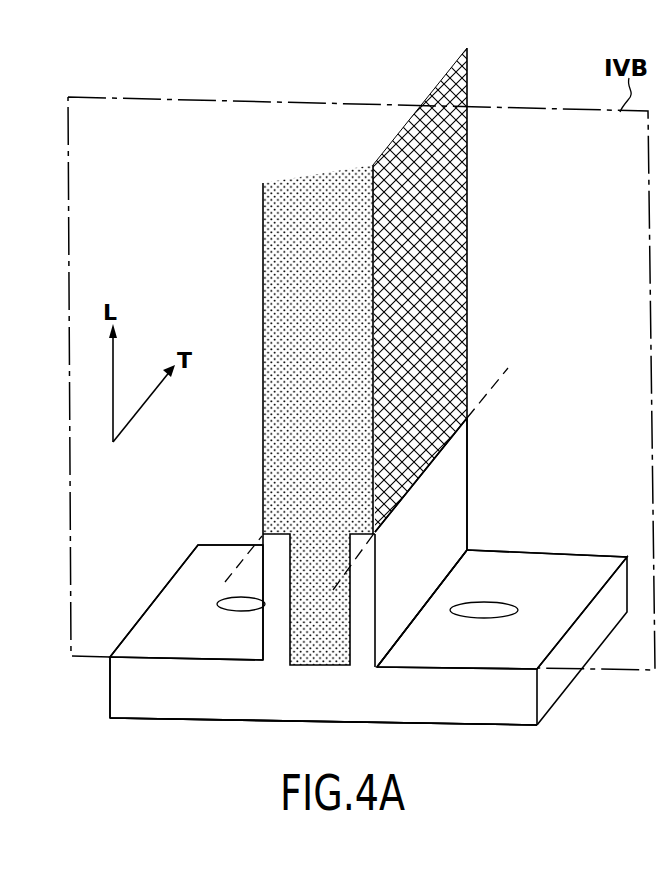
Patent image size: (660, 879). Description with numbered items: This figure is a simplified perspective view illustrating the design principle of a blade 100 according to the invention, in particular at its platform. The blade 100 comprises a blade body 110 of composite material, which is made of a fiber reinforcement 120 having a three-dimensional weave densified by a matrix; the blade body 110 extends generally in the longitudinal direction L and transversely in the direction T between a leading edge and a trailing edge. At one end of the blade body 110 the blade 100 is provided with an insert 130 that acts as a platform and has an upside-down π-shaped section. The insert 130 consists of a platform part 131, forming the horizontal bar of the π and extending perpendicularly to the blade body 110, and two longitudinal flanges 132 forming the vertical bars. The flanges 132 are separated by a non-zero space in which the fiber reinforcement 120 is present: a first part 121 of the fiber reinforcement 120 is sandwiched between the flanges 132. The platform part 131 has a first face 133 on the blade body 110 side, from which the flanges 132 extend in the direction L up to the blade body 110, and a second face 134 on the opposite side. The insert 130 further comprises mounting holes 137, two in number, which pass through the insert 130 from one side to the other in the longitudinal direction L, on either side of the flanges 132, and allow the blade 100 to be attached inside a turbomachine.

The blade 100 is at (156, 81).
The blade body 110 is at (480, 83).
The fiber reinforcement 120 is at (445, 238).
The first part 121 is at (333, 606).
The insert 130 is at (573, 698).
The platform part 131 is at (126, 691).
The longitudinal flanges 132 is at (273, 558).
The first face 133 is at (551, 574).
The second face 134 is at (142, 721).
The mounting holes 137 is at (219, 603).